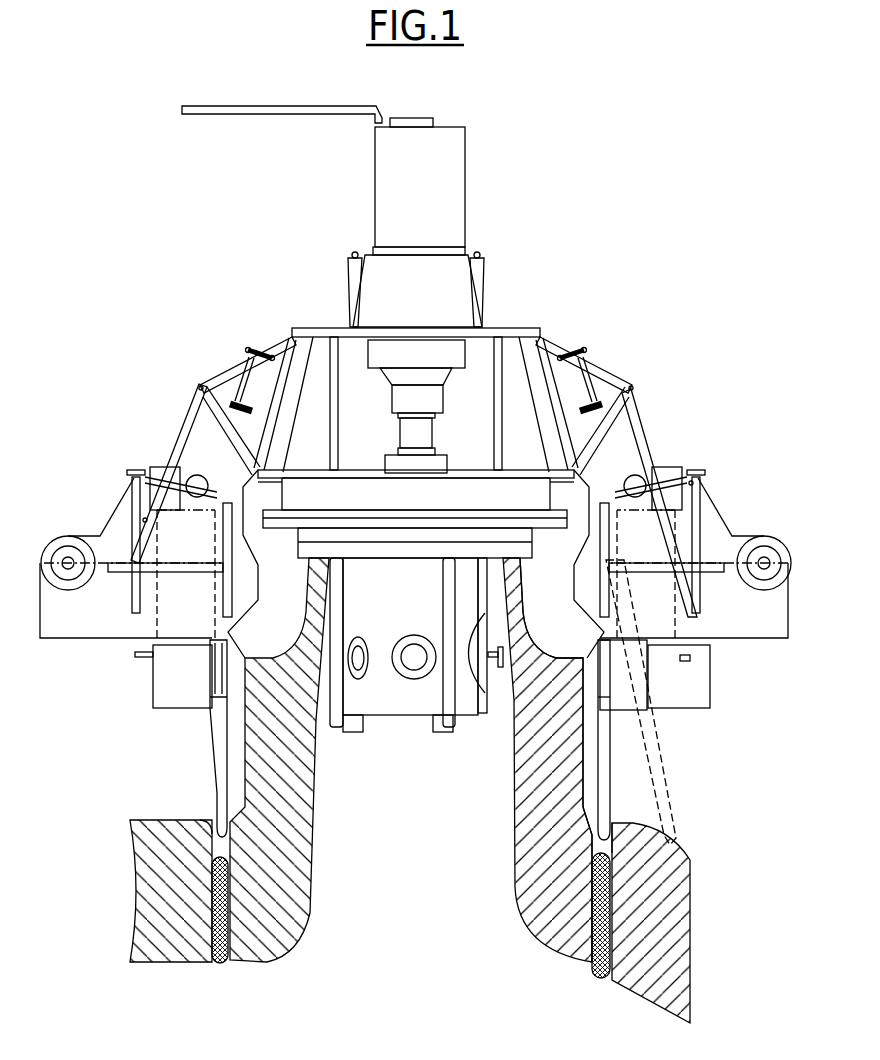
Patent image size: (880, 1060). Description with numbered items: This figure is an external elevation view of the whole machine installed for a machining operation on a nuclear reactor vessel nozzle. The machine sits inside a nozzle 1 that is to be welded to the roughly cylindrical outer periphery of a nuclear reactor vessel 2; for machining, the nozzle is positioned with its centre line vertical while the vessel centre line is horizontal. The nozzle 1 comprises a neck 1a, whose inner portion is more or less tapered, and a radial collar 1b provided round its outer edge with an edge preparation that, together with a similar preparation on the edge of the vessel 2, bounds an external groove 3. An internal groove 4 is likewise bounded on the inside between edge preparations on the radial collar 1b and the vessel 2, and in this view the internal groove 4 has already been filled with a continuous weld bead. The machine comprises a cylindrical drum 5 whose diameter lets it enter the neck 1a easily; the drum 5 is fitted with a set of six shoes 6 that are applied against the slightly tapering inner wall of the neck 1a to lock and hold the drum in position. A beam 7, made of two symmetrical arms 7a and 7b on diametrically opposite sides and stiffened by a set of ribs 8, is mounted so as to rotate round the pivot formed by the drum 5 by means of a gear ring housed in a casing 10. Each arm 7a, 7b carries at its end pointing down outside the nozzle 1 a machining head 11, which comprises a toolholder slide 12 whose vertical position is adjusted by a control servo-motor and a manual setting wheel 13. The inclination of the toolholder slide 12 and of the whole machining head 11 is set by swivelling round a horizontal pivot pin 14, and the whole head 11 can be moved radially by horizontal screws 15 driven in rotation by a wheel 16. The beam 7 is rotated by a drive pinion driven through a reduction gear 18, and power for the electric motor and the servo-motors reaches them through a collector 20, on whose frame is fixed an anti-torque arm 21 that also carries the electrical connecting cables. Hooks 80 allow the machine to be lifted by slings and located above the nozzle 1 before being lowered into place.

The nozzle 1 is at (554, 850).
The neck 1a is at (543, 770).
The radial collar 1b is at (557, 920).
The nuclear reactor vessel 2 is at (660, 865).
The external groove 3 is at (212, 833).
The internal groove 4 is at (218, 903).
The cylindrical drum 5 is at (422, 690).
The shoes 6 is at (357, 662).
The beam 7 is at (309, 358).
The arm 7a is at (185, 417).
The arm 7b is at (650, 425).
The ribs 8 is at (200, 385).
The casing 10 is at (527, 497).
The machining head 11 is at (180, 687).
The toolholder slide 12 is at (220, 792).
The manual setting wheel 13 is at (152, 678).
The horizontal pivot pin 14 is at (180, 578).
The horizontal screws 15 is at (100, 560).
The wheel 16 is at (66, 537).
The reduction gear 18 is at (432, 441).
The collector 20 is at (392, 173).
The anti-torque arm 21 is at (262, 114).
The hooks 80 is at (250, 358).